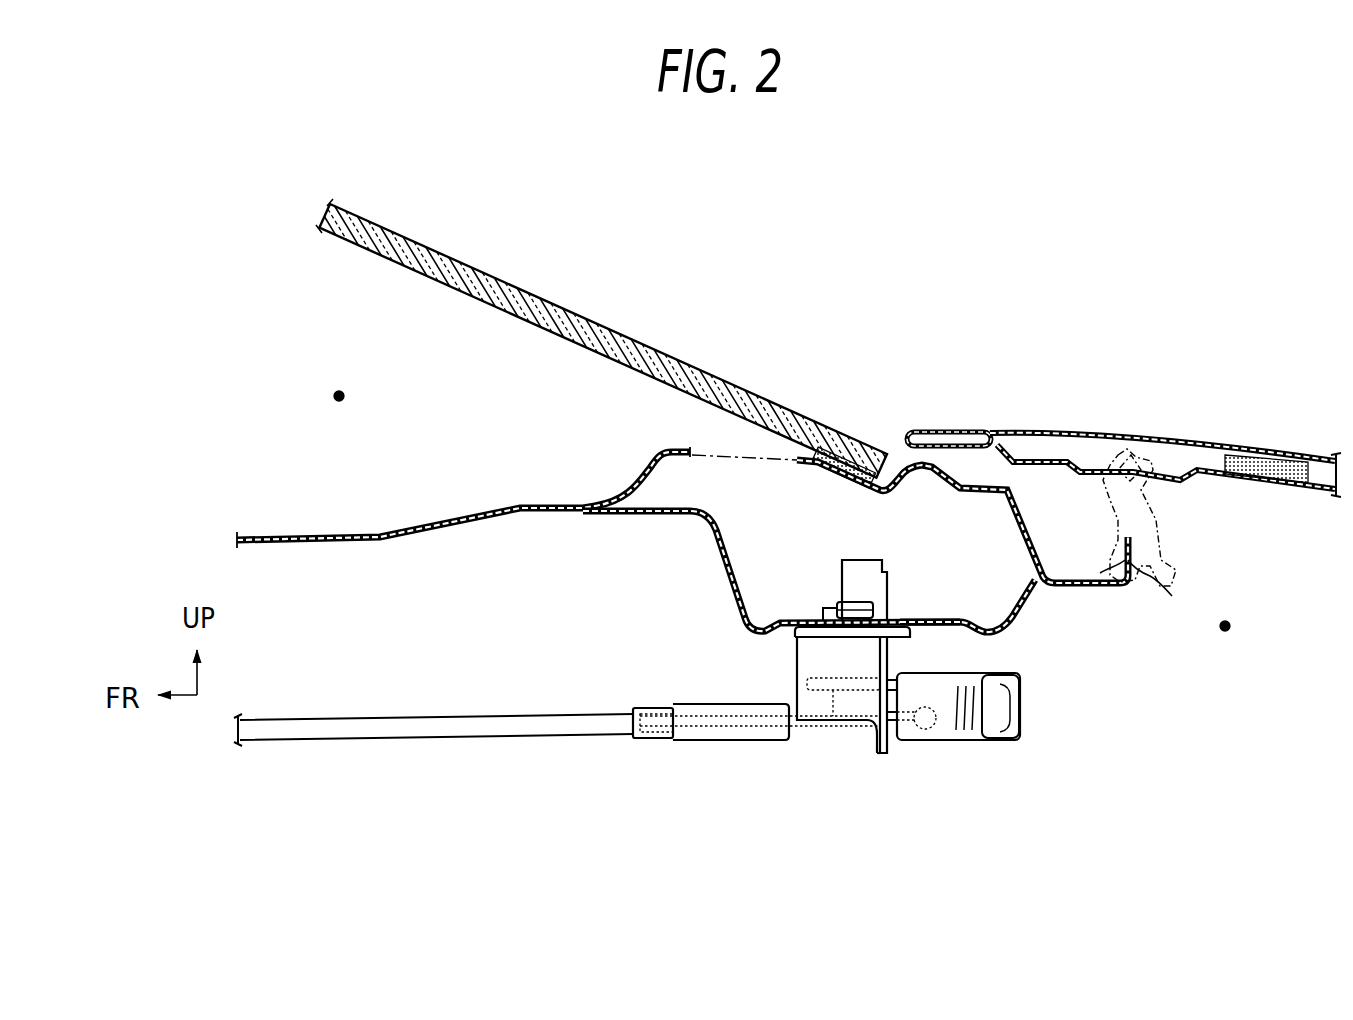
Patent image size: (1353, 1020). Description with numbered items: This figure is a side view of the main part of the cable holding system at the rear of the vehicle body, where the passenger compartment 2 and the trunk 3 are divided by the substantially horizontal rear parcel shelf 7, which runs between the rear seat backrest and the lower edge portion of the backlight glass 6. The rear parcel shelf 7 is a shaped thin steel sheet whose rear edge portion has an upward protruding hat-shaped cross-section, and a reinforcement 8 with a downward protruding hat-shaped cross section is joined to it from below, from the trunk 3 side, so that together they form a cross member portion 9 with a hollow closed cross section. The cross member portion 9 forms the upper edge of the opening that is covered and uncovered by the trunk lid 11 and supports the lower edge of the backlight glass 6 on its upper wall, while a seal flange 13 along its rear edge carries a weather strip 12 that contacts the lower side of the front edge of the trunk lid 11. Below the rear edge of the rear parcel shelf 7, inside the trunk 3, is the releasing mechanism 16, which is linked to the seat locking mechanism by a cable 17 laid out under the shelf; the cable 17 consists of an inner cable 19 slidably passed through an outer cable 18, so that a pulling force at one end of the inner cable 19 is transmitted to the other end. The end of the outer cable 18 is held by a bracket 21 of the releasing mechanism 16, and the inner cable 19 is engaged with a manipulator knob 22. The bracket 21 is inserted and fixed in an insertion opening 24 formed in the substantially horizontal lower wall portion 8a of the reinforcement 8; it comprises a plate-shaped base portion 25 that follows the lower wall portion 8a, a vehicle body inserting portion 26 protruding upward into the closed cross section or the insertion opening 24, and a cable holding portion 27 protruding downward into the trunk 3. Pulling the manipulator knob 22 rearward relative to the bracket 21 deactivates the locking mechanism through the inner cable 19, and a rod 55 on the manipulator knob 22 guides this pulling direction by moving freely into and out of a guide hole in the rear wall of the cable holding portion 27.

The passenger compartment 2 is at (341, 391).
The trunk 3 is at (1229, 621).
The backlight glass 6 is at (650, 320).
The rear parcel shelf 7 is at (490, 480).
The reinforcement 8 is at (1042, 618).
The lower wall portion 8a is at (935, 628).
The cross member portion 9 is at (988, 482).
The trunk lid 11 is at (1201, 430).
The weather strip 12 is at (1150, 525).
The seal flange 13 is at (1151, 587).
The releasing mechanism 16 is at (627, 756).
The cable 17 is at (398, 752).
The outer cable 18 is at (585, 727).
The inner cable 19 is at (723, 742).
The bracket 21 is at (810, 762).
The manipulator knob 22 is at (962, 762).
The insertion opening 24 is at (887, 612).
The base portion 25 is at (793, 634).
The vehicle body inserting portion 26 is at (830, 606).
The cable holding portion 27 is at (795, 680).
The rod 55 is at (837, 727).